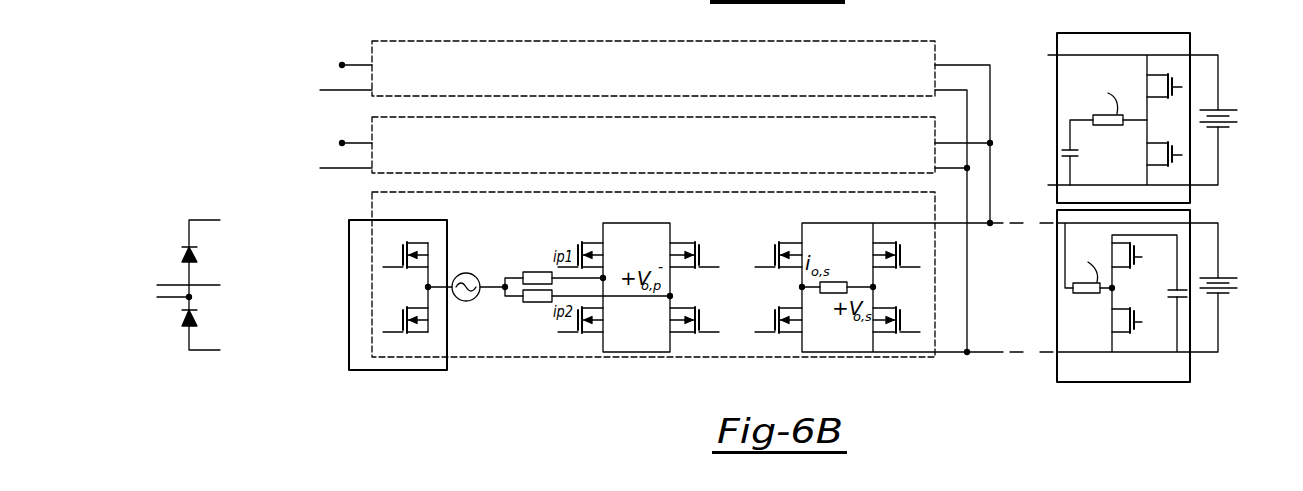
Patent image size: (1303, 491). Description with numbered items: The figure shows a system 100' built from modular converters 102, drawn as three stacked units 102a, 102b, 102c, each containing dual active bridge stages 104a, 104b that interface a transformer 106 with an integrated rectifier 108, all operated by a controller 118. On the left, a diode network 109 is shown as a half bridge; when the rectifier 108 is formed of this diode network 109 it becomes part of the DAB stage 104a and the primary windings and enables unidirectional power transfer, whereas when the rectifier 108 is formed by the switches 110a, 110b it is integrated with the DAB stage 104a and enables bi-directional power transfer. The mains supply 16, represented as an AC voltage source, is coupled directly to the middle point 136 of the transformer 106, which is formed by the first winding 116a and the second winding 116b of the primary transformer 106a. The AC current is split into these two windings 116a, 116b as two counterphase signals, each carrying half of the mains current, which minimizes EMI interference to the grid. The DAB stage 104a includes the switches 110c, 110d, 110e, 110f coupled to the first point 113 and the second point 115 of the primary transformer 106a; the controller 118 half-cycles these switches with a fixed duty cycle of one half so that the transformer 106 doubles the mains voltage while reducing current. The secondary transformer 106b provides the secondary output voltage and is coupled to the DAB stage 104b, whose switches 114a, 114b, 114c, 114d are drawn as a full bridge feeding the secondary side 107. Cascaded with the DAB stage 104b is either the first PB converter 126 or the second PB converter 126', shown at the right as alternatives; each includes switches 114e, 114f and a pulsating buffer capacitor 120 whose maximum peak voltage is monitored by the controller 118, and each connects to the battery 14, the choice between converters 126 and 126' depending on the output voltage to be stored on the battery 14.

The system 100' is at (186, 23).
The controller 118 is at (291, 32).
The modular converters 102 is at (605, 36).
The modular converter 102a is at (613, 70).
The modular converter 102b is at (613, 147).
The modular converter 102c is at (613, 222).
The secondary side 107 is at (978, 126).
The rectifier 108 is at (398, 372).
The diode network 109 is at (158, 268).
The mains supply 16 is at (294, 292).
The switch 110a is at (383, 267).
The switch 110b is at (383, 332).
The switch 110c is at (605, 241).
The switch 110d is at (562, 333).
The switch 110e is at (709, 268).
The switch 110f is at (709, 333).
The middle point 136 is at (503, 290).
The transformer 106 is at (520, 304).
The primary transformer 106a is at (496, 282).
The secondary transformer 106b is at (843, 282).
The first winding 116a is at (538, 272).
The second winding 116b is at (538, 302).
The first point 113 is at (605, 280).
The second point 115 is at (668, 298).
The DAB stage 104a is at (703, 210).
The DAB stage 104b is at (835, 216).
The switch 114a is at (765, 267).
The switch 114b is at (765, 332).
The switch 114c is at (920, 267).
The switch 114d is at (920, 332).
The switch 114e is at (1182, 87).
The switch 114f is at (1182, 155).
The first PB converter 126 is at (1164, 114).
The second PB converter 126' is at (1172, 303).
The capacitor 120 is at (1080, 157).
The battery 14 is at (1237, 120).